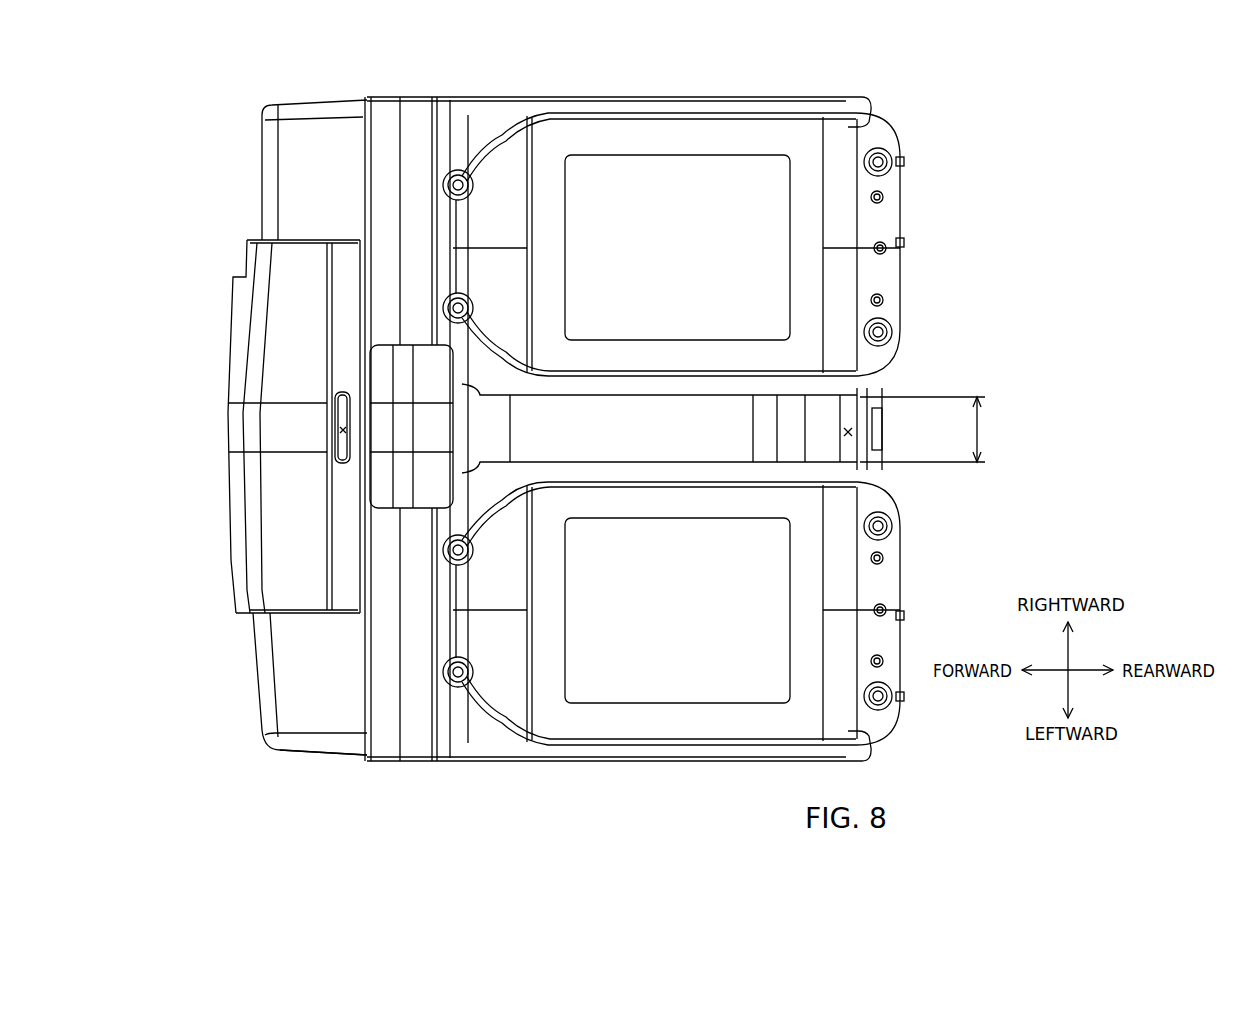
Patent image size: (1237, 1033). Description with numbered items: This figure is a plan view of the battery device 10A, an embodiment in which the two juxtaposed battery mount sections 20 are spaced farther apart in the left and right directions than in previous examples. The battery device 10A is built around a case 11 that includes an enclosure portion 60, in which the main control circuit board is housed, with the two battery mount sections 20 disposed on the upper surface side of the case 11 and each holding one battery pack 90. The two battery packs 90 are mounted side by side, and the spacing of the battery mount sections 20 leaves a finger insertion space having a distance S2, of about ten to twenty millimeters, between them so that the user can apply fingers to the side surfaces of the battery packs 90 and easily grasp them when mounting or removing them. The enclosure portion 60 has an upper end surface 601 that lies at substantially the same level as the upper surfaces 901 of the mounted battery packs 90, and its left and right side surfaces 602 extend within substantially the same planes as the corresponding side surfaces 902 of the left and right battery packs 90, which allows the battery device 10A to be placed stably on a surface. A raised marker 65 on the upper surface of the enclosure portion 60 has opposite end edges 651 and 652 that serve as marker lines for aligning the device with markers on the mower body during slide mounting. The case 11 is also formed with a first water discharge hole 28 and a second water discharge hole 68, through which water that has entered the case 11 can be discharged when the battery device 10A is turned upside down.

The battery device 10A is at (968, 118).
The case 11 is at (440, 732).
The battery mount section 20 is at (455, 130).
The first water discharge hole 28 is at (852, 436).
The enclosure portion 60 is at (302, 695).
The upper end surface 601 is at (340, 525).
The side surface 602 is at (326, 100).
The marker 65 is at (278, 480).
The end edge 651 is at (300, 617).
The end edge 652 is at (300, 238).
The second water discharge hole 68 is at (343, 428).
The battery pack 90 is at (877, 218).
The upper surface 901 is at (655, 190).
The side surface 902 is at (746, 98).
The distance S2 is at (933, 429).